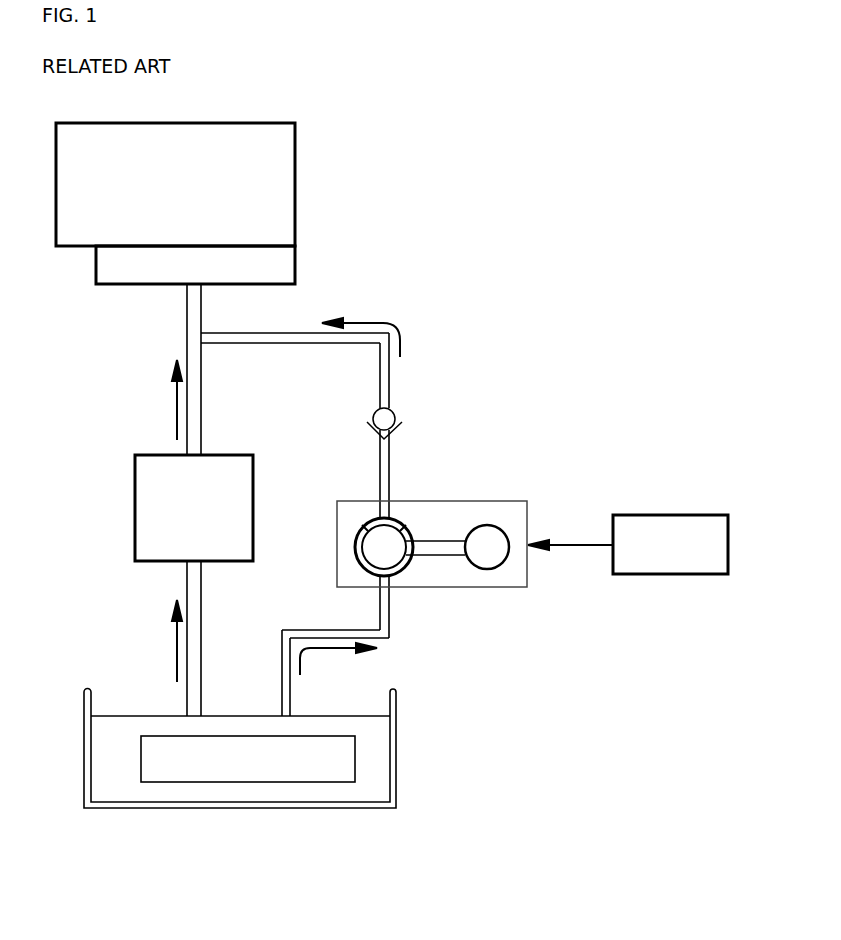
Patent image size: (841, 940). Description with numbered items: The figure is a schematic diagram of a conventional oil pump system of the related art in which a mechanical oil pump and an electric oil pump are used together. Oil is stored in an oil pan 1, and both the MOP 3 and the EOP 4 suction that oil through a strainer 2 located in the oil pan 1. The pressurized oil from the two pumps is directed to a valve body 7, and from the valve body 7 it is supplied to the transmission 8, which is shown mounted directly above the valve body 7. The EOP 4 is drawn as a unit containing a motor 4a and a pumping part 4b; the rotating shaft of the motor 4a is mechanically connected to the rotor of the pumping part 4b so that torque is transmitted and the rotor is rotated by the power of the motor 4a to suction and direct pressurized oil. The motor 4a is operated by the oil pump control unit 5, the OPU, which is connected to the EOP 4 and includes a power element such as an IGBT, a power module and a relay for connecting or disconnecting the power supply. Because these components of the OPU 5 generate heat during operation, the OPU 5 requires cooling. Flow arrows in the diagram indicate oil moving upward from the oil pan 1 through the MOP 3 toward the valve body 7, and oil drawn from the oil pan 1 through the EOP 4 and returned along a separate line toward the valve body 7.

The oil pan 1 is at (396, 757).
The strainer 2 is at (245, 782).
The mechanical oil pump (MOP) 3 is at (135, 505).
The electric oil pump (EOP) 4 is at (475, 500).
The motor 4a is at (502, 568).
The pumping part 4b is at (369, 520).
The oil pump control unit (OPU) 5 is at (665, 515).
The valve body 7 is at (297, 265).
The transmission 8 is at (297, 183).